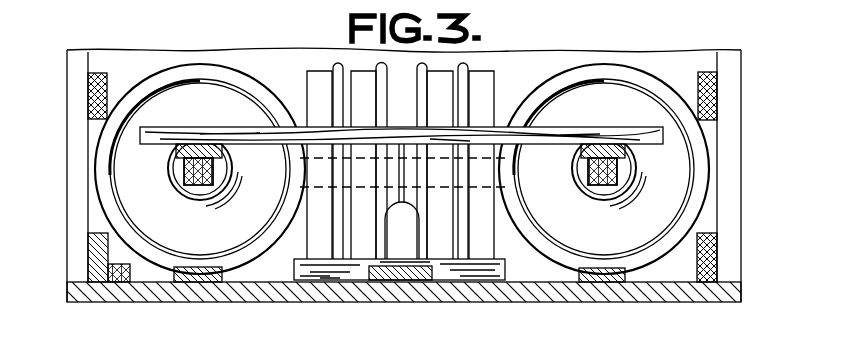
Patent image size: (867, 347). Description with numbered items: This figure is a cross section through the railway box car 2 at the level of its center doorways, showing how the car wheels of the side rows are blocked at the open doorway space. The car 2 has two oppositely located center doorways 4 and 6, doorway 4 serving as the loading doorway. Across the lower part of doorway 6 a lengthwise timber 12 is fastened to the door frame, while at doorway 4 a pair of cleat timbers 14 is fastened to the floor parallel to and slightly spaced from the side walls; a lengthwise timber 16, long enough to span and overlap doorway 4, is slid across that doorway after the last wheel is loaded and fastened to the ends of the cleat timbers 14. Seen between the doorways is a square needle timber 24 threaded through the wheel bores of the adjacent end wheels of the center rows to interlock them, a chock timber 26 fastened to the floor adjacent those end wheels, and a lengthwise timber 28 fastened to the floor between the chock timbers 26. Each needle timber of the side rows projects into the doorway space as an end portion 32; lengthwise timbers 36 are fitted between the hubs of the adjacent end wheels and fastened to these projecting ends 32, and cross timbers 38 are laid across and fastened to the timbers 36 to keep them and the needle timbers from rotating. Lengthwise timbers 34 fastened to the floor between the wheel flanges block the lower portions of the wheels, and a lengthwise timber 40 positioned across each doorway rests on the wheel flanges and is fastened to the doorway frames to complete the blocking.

The railway box car 2 is at (260, 292).
The center doorway 4 is at (73, 194).
The center doorway 6 is at (732, 193).
The lengthwise timber 12 is at (717, 256).
The cleat timber 14 is at (120, 272).
The lengthwise timber 16 is at (88, 248).
The square needle timber 24 is at (322, 176).
The chock timber 26 is at (313, 277).
The lengthwise timber 28 is at (400, 273).
The end portion 32 is at (184, 176).
The lengthwise timber 34 is at (202, 276).
The lengthwise timber 36 is at (176, 151).
The cross timber 38 is at (213, 123).
The lengthwise timber 40 is at (88, 95).